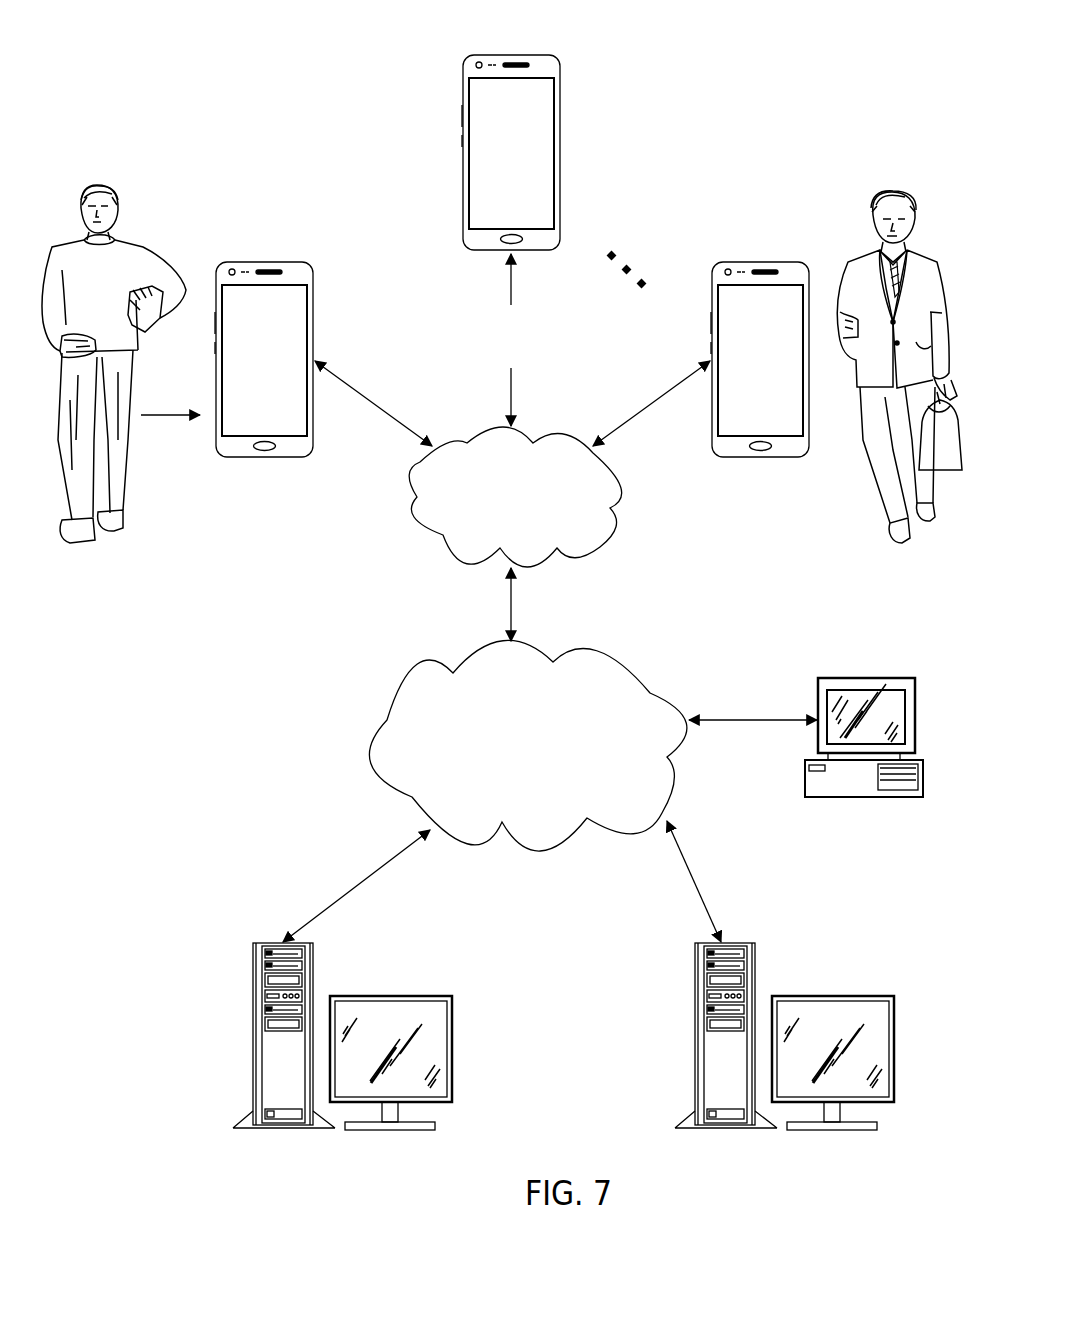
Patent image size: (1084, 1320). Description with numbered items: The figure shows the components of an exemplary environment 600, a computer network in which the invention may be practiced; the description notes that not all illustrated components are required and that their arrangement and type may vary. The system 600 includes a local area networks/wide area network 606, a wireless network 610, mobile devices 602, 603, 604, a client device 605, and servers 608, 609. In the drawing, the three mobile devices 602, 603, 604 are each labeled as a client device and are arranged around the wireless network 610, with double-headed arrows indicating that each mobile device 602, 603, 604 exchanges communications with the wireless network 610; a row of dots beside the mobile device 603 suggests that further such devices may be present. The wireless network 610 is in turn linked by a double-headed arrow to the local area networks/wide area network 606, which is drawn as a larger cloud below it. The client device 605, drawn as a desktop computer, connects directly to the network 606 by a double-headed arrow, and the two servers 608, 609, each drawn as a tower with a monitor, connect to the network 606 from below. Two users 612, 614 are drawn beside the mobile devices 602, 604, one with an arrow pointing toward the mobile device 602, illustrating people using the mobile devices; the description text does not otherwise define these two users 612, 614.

The environment 600 is at (716, 72).
The mobile device 602 is at (283, 262).
The mobile device 603 is at (463, 156).
The mobile device 604 is at (778, 262).
The client device 605 is at (865, 678).
The local area networks/wide area network 606 is at (373, 742).
The server 608 is at (390, 996).
The server 609 is at (832, 996).
The wireless network 610 is at (411, 505).
The user 612 is at (120, 500).
The user 614 is at (880, 480).